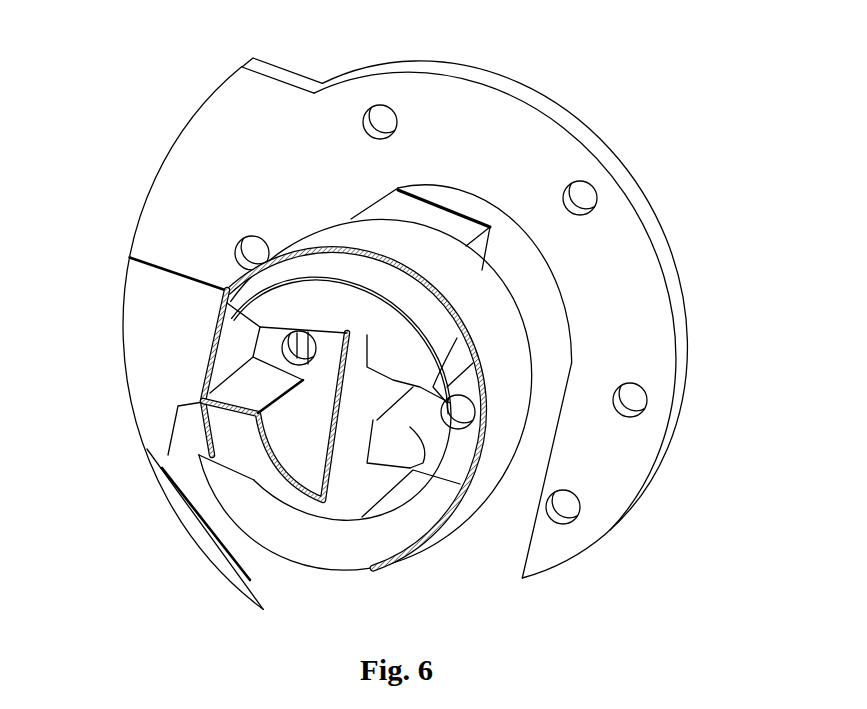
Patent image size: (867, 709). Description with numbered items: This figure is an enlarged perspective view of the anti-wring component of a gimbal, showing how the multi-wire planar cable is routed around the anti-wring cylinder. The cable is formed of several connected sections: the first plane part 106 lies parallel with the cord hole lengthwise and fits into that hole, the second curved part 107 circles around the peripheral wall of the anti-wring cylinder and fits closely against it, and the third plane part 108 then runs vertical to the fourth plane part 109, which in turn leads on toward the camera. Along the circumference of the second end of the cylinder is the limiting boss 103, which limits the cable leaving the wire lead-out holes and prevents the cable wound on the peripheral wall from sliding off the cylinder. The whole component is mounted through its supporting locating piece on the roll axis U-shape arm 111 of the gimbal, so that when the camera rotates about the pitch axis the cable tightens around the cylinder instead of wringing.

The limiting boss 103 is at (329, 567).
The first plane part 106 is at (352, 420).
The second curved part 107 is at (490, 335).
The third plane part 108 is at (237, 268).
The fourth plane part 109 is at (160, 317).
The roll axis U-shape arm 111 is at (643, 343).